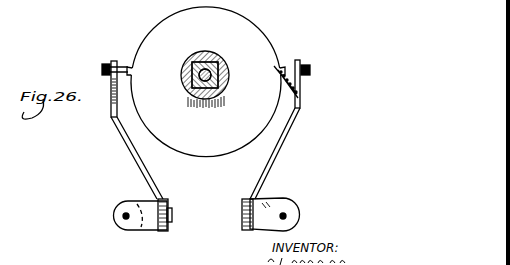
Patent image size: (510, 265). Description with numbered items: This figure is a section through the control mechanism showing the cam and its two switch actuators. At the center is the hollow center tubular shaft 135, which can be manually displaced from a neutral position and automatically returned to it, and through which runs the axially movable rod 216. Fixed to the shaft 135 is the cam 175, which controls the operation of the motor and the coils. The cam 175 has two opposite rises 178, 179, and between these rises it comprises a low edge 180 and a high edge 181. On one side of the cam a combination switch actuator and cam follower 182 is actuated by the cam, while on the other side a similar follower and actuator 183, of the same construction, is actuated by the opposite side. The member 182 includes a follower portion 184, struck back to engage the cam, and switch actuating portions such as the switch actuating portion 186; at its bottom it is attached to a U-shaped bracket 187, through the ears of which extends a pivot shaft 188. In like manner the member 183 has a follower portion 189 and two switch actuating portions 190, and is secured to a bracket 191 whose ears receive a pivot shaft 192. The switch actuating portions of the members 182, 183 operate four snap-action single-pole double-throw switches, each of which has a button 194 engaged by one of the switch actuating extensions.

The center tubular shaft 135 is at (206, 62).
The cam 175 is at (238, 47).
The rise 178 is at (135, 77).
The rise 179 is at (272, 82).
The low edge 180 is at (173, 18).
The high edge 181 is at (192, 157).
The combination switch actuator and cam follower 182 is at (134, 155).
The follower and actuator 183 is at (302, 109).
The follower portion 184 is at (129, 66).
The switch actuating portion 186 is at (112, 62).
The U-shaped bracket 187 is at (146, 228).
The pivot shaft 188 is at (122, 216).
The follower portion 189 is at (281, 67).
The switch actuating portions 190 is at (300, 61).
The bracket 191 is at (270, 201).
The pivot shaft 192 is at (287, 216).
The button 194 is at (101, 68).
The rod 216 is at (199, 72).